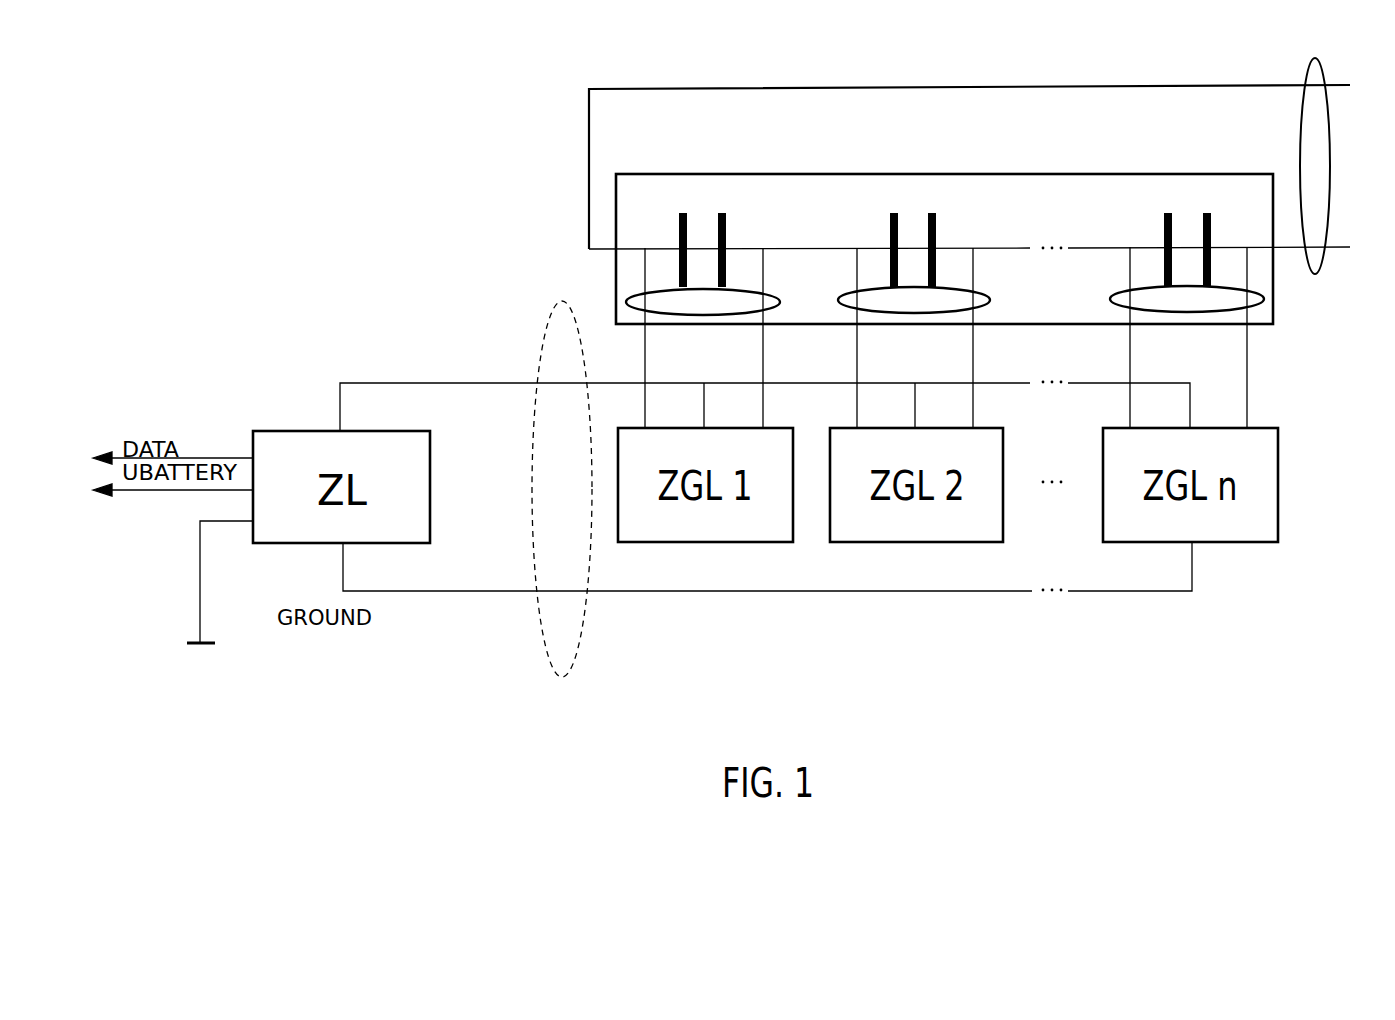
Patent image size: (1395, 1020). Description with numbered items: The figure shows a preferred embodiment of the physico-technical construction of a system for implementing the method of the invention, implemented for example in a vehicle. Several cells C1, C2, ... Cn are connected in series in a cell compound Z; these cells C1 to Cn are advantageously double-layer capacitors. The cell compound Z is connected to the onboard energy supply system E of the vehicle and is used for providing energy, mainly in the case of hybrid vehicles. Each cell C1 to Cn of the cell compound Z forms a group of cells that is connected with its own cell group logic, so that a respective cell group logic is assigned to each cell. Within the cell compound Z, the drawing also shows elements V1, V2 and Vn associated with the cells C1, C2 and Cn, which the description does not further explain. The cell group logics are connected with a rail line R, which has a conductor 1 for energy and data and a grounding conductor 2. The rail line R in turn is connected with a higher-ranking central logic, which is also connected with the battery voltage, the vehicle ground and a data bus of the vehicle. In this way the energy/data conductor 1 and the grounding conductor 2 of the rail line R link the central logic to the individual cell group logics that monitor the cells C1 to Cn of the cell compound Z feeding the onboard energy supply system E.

The conductor for energy/data 1 is at (340, 399).
The grounding conductor 2 is at (483, 594).
The rail line R is at (579, 650).
The onboard energy supply system E is at (1306, 64).
The cell compound Z is at (1054, 196).
The cell C1 is at (727, 219).
The cell C2 is at (937, 219).
The cell Cn is at (1212, 219).
The valve 1 V1 is at (770, 292).
The valve 2 V2 is at (980, 292).
The valve n Vn is at (1126, 291).